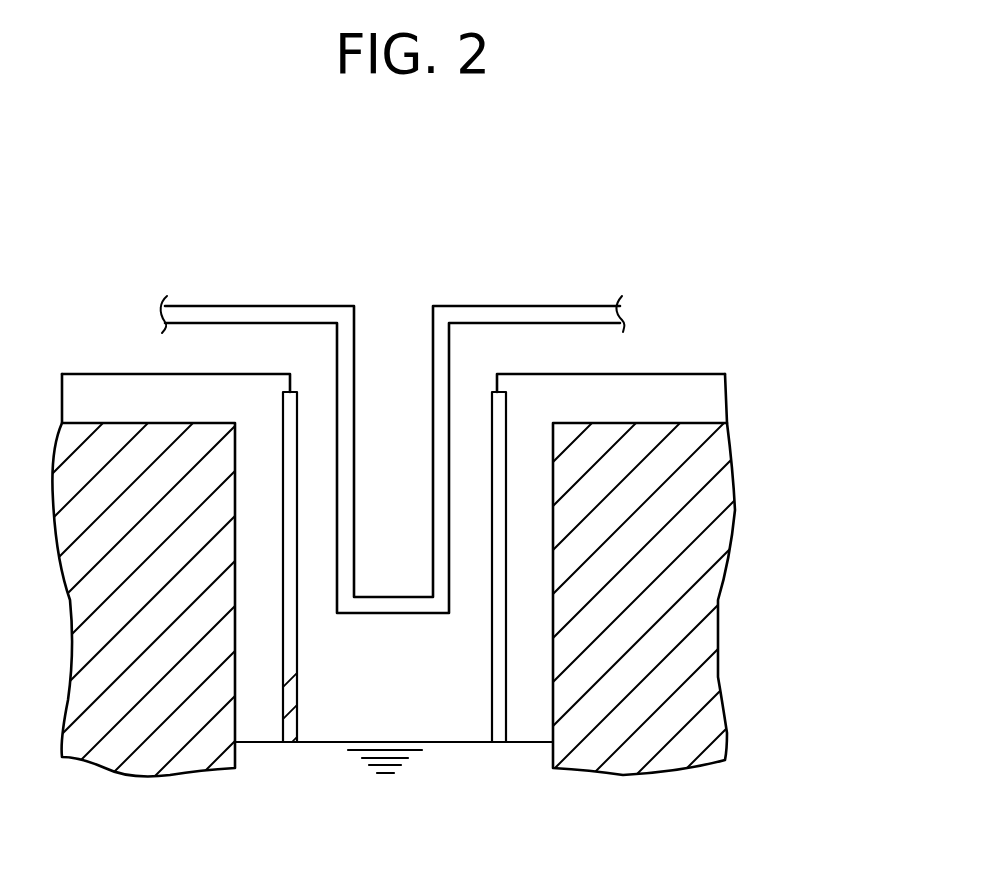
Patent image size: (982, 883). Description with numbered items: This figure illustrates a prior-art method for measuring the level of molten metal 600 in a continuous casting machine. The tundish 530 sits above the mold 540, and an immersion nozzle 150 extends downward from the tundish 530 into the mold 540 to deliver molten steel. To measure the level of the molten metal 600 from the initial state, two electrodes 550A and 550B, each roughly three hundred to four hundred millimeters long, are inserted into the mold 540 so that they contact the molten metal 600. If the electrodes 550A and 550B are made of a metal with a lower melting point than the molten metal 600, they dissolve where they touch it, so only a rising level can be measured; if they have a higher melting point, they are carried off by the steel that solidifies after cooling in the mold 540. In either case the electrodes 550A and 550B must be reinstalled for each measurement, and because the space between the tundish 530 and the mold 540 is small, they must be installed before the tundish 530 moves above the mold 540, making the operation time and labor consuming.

The tundish 530 is at (608, 308).
The immersion nozzle 150 is at (442, 368).
The mold 540 is at (703, 510).
The electrode 550A is at (283, 747).
The electrode 550B is at (493, 747).
The molten metal 600 is at (438, 767).